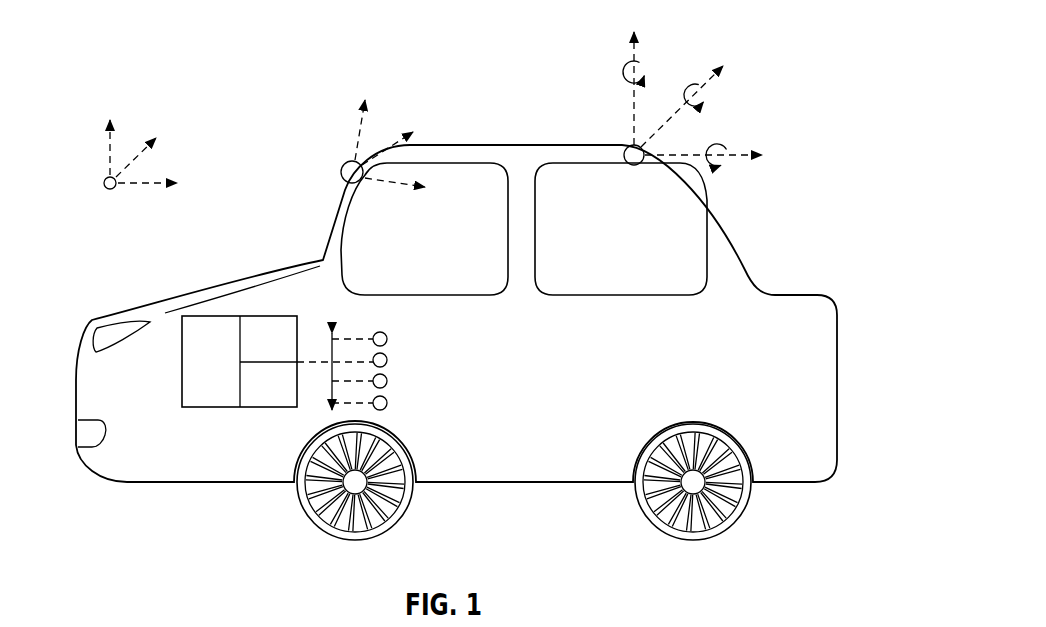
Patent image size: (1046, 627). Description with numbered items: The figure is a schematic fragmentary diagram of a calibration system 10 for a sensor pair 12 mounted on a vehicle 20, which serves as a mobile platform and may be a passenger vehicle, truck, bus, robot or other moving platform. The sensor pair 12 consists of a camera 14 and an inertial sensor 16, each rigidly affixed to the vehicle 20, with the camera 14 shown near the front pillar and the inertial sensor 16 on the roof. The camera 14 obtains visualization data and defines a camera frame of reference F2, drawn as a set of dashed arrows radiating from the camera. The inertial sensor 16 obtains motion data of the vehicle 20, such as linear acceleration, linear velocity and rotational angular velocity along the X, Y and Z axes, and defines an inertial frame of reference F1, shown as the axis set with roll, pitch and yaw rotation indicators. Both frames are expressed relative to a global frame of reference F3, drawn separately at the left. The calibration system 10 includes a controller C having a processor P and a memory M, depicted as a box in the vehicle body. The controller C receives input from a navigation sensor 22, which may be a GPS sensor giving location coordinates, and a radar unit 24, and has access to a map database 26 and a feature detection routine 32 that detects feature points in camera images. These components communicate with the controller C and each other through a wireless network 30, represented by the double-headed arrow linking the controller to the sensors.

The calibration system 10 is at (134, 297).
The sensor pair 12 is at (496, 97).
The camera 14 is at (341, 170).
The inertial sensor 16 is at (625, 147).
The vehicle 20 is at (790, 294).
The navigation sensor 22 is at (388, 338).
The radar unit 24 is at (388, 361).
The map database 26 is at (388, 382).
The wireless network 30 is at (337, 333).
The feature detection routine 32 is at (388, 404).
The inertial frame of reference F1 is at (735, 95).
The camera frame of reference F2 is at (348, 122).
The global frame of reference F3 is at (103, 148).